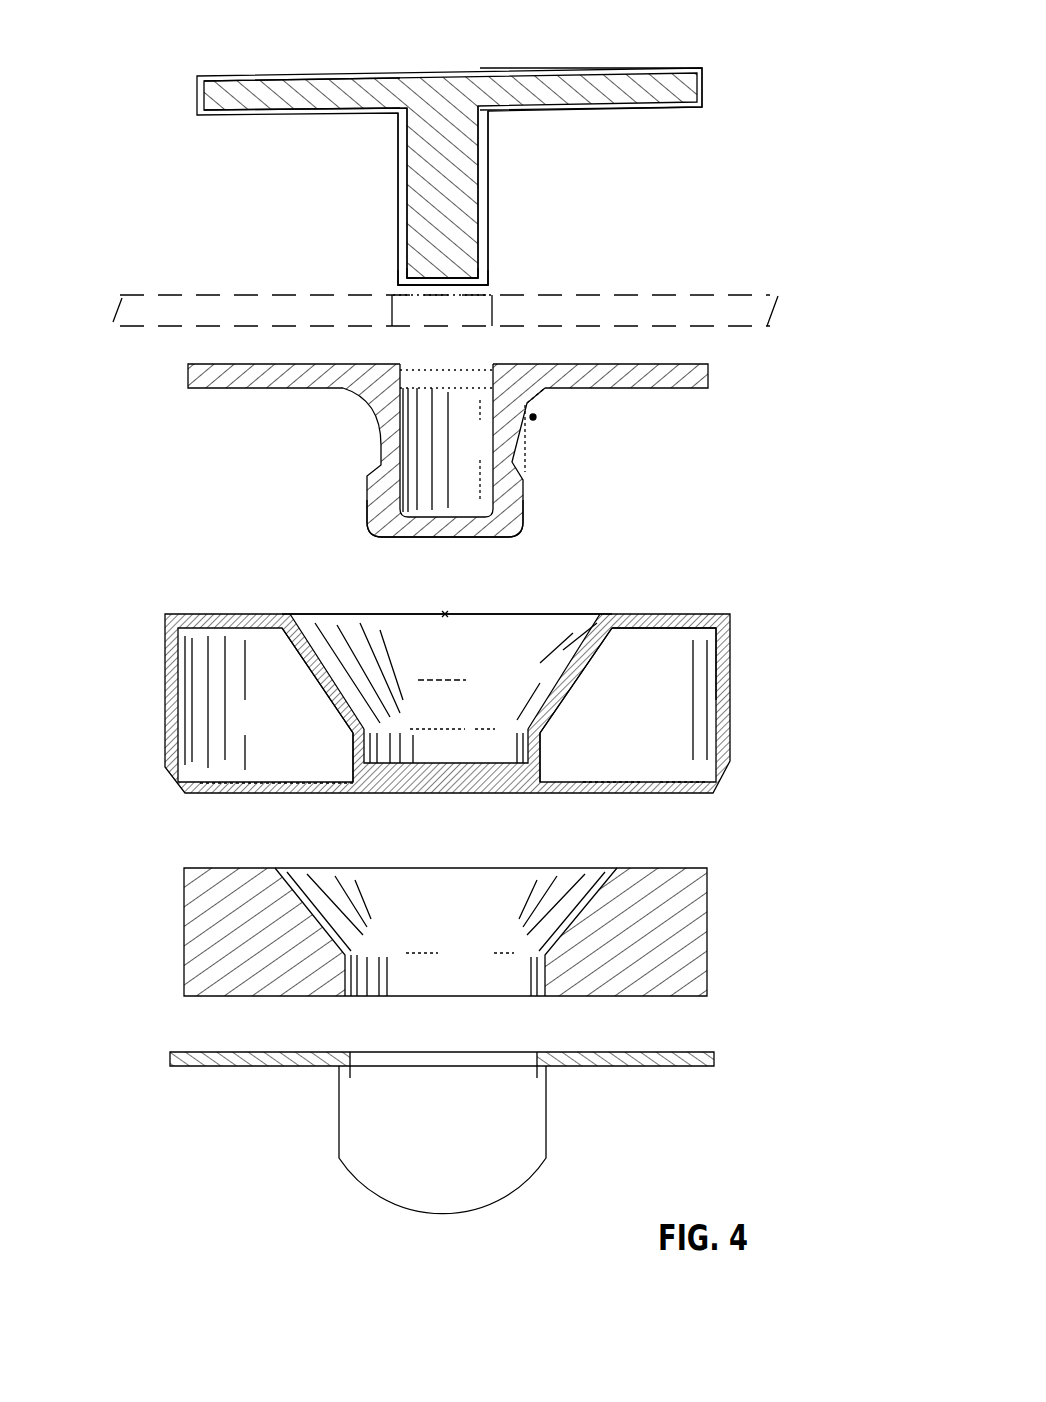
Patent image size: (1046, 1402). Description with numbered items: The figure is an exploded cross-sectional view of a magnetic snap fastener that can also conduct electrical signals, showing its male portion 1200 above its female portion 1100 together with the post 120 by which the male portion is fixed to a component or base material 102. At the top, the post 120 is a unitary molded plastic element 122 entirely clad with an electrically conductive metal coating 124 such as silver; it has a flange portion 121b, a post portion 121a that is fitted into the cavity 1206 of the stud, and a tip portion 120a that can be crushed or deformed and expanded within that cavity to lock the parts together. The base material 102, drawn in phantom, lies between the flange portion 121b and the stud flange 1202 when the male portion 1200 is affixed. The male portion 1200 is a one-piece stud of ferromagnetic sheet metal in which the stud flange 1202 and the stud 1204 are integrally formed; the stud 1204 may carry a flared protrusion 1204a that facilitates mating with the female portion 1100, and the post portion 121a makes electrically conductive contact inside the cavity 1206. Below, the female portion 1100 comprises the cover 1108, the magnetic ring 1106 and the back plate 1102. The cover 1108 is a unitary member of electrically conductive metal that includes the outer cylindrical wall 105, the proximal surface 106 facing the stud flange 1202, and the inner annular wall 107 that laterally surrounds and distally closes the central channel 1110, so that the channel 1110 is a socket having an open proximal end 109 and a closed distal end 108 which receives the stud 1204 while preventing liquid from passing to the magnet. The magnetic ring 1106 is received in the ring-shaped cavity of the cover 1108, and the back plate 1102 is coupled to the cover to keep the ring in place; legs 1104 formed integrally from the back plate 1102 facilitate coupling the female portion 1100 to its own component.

The component/base material 102 is at (683, 294).
The post 120 is at (407, 65).
The tip portion 120a is at (400, 253).
The post portion 121a is at (397, 187).
The flange portion 121b is at (238, 97).
The unitary molded plastic element 122 is at (522, 100).
The electrically conductive metal coating 124 is at (487, 170).
The male portion 1200 is at (712, 404).
The stud flange 1202 is at (238, 389).
The stud 1204 is at (380, 446).
The flared protrusion 1204a is at (527, 508).
The cavity 1206 is at (500, 442).
The female portion 1100 is at (760, 817).
The cover 1108 is at (733, 677).
The outer cylindrical wall 105 is at (726, 723).
The proximal surface 106 is at (673, 614).
The inner annular wall 107 is at (570, 670).
The closed distal end 108 is at (483, 780).
The open proximal end 109 is at (405, 613).
The central channel 1110 is at (449, 667).
The magnetic ring 1106 is at (184, 926).
The back plate 1102 is at (632, 1066).
The legs 1104 is at (339, 1132).